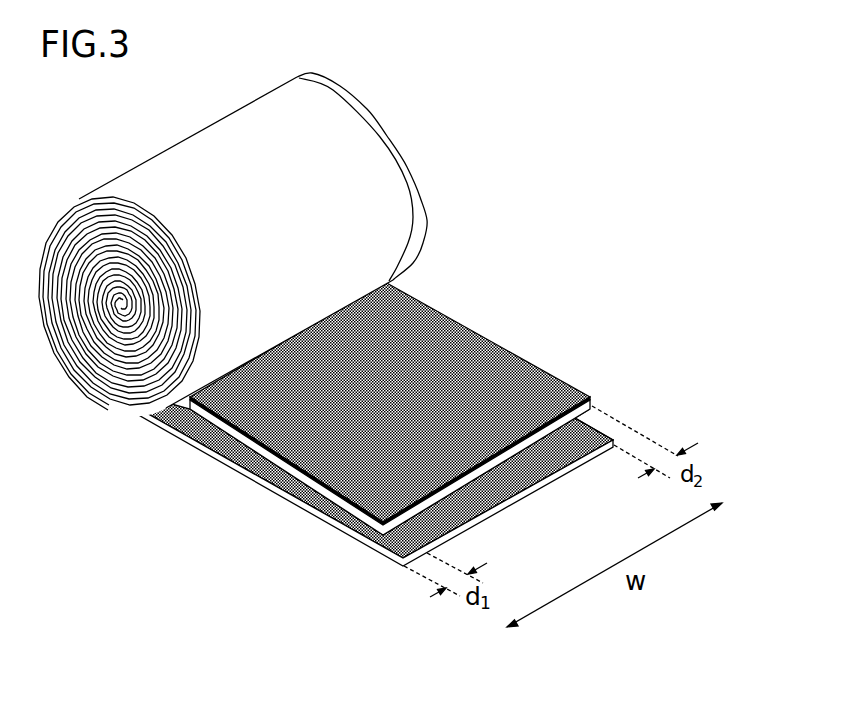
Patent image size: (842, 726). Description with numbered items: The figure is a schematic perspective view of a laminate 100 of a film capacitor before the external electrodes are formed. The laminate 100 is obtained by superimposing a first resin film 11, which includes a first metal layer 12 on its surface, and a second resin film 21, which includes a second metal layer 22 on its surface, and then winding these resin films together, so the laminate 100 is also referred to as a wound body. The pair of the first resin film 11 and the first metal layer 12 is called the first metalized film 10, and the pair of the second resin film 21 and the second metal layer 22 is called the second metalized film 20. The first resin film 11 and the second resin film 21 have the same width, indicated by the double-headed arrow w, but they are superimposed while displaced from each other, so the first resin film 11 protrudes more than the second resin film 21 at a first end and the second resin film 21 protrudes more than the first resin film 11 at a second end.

The laminate 100 is at (513, 97).
The first metalized film 10 is at (401, 429).
The first resin film 11 is at (578, 428).
The first metal layer 12 is at (598, 437).
The second metalized film 20 is at (390, 438).
The second resin film 21 is at (270, 449).
The second metal layer 22 is at (343, 458).